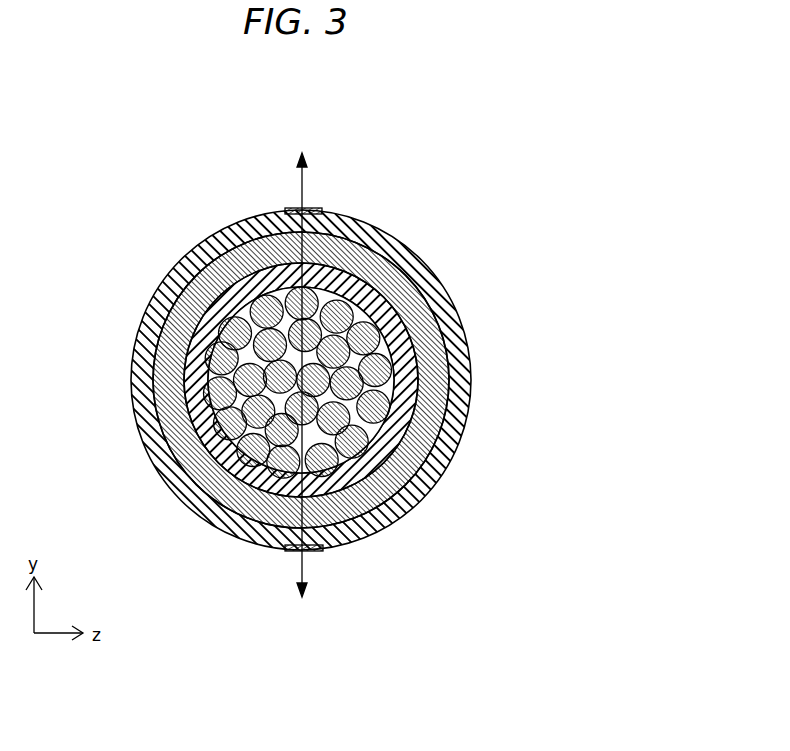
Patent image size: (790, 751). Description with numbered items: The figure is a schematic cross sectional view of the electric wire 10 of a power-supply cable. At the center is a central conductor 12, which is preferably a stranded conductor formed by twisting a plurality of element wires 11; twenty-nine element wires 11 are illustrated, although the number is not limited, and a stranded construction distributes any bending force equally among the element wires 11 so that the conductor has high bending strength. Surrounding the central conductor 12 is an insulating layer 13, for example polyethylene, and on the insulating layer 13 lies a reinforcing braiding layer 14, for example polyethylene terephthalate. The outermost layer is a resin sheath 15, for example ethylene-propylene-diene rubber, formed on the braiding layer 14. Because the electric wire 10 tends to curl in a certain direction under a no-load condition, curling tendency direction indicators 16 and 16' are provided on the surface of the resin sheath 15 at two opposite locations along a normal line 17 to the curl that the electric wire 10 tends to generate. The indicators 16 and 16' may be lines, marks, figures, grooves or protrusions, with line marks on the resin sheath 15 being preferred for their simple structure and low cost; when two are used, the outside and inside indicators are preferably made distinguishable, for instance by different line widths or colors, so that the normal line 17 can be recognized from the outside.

The electric wire 10 is at (326, 350).
The element wire 11 is at (375, 283).
The central conductor 12 is at (385, 350).
The insulating layer 13 is at (225, 450).
The reinforcing braiding layer 14 is at (164, 290).
The resin sheath 15 is at (430, 490).
The curling tendency direction indicator 16 is at (315, 583).
The curling tendency direction indicator 16' is at (327, 177).
The normal line 17 is at (300, 193).